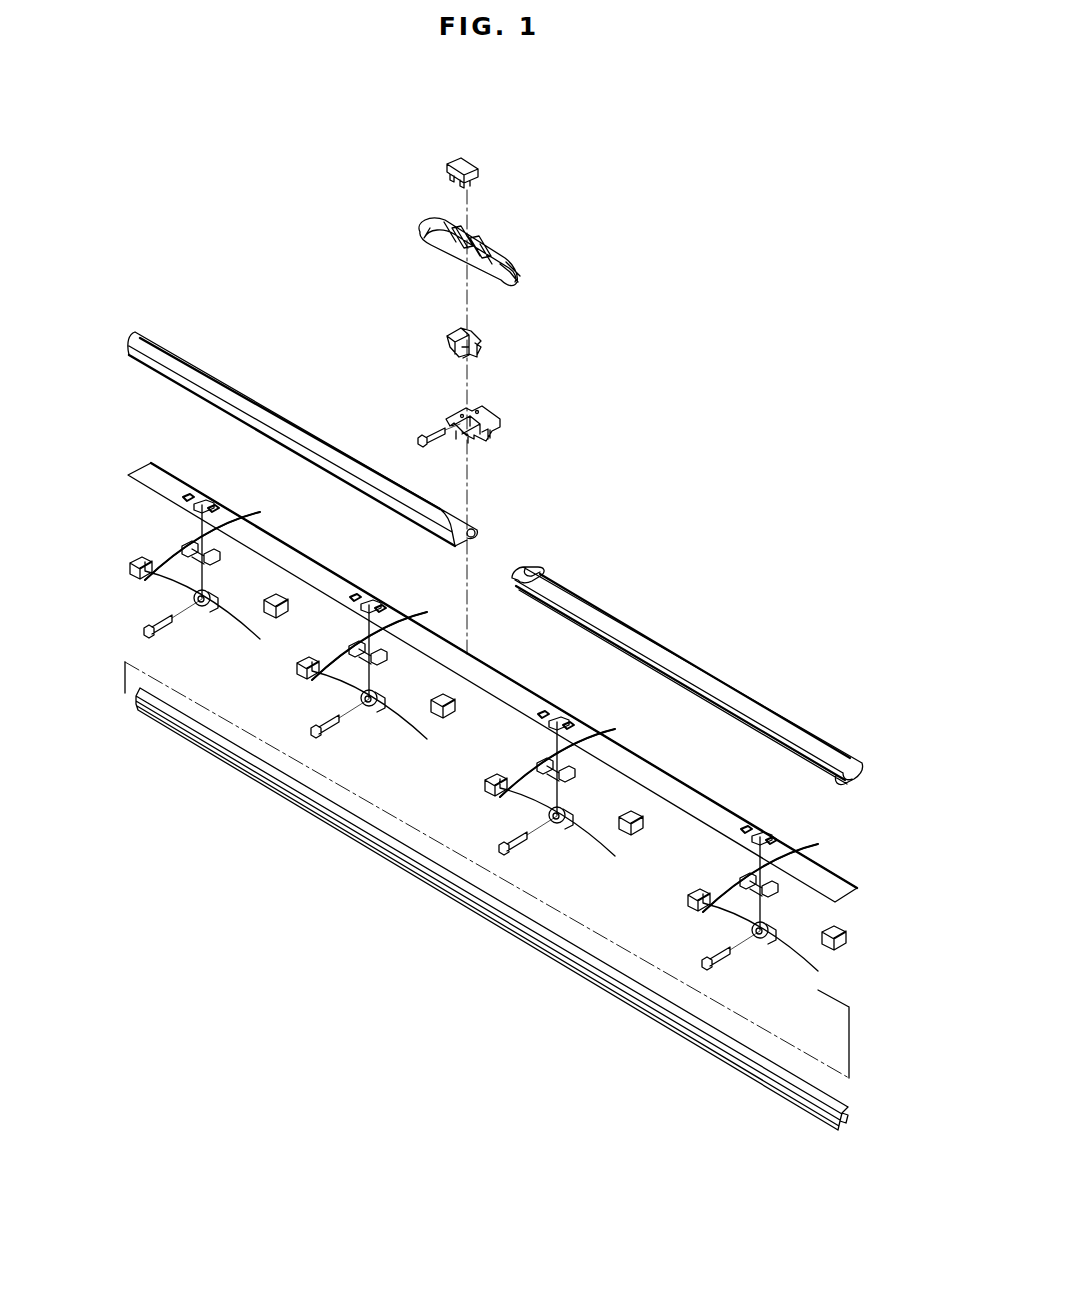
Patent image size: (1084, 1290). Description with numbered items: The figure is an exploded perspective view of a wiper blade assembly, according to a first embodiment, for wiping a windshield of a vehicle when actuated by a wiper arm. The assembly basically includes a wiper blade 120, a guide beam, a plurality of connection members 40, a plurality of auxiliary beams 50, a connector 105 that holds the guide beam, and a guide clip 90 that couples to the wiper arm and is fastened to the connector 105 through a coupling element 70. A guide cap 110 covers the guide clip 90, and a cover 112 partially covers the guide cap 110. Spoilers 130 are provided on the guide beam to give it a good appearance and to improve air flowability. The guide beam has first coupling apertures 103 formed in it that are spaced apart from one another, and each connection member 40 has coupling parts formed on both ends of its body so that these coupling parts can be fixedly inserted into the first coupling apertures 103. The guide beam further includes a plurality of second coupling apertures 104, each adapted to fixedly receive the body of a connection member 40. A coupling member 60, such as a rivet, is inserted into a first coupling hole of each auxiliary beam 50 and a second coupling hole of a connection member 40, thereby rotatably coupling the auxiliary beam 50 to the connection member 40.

The cover 112 is at (464, 157).
The guide cap 110 is at (506, 257).
The guide clip 90 is at (487, 345).
The connector 105 is at (496, 426).
The coupling element 70 is at (429, 432).
The spoiler 130 is at (298, 430).
The wiper blade 120 is at (451, 868).
The second coupling aperture 104 is at (202, 598).
The first coupling aperture 103 is at (202, 598).
The connection member 40 is at (202, 598).
The auxiliary beam 50 is at (202, 598).
The coupling member 60 is at (202, 598).